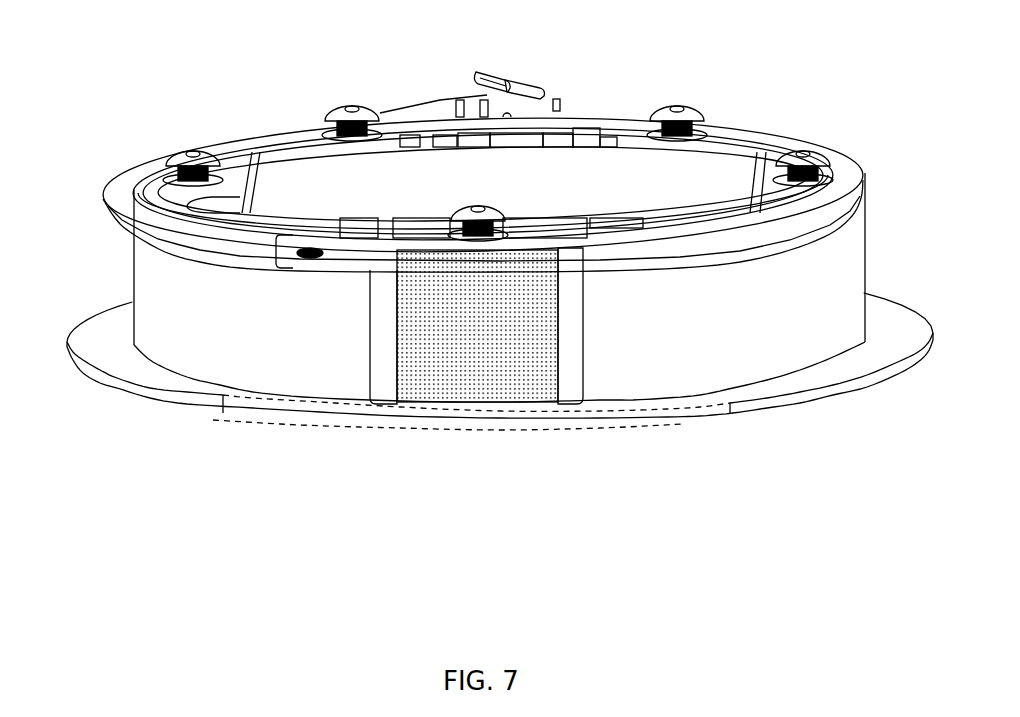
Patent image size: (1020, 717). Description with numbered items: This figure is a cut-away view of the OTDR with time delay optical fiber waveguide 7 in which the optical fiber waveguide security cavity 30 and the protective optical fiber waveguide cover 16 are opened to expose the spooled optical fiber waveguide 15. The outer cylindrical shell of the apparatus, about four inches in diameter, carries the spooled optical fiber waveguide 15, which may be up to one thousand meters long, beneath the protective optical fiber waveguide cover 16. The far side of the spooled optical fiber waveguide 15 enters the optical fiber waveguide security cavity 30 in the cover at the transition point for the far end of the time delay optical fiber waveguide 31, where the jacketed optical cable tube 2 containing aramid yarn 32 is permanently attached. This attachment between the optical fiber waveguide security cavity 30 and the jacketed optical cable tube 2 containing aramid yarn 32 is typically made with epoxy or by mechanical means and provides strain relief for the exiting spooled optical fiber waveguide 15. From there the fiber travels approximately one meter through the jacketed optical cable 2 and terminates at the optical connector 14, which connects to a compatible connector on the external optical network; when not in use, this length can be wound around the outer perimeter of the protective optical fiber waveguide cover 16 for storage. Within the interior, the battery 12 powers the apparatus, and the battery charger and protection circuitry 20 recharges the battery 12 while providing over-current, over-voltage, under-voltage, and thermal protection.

The jacketed optical cable 2 is at (127, 214).
The OTDR with time delay optical fiber waveguide 7 is at (797, 412).
The battery 12 is at (662, 187).
The optical connector 14 is at (476, 104).
The spooled optical fiber waveguide 15 is at (489, 305).
The protective optical fiber waveguide cover 16 is at (812, 260).
The battery charger and protection circuitry 20 is at (530, 133).
The optical fiber waveguide security cavity 30 is at (287, 245).
The transition point for the far end of the time delay optical fiber waveguide 31 is at (410, 262).
The aramid yarn 32 is at (307, 253).